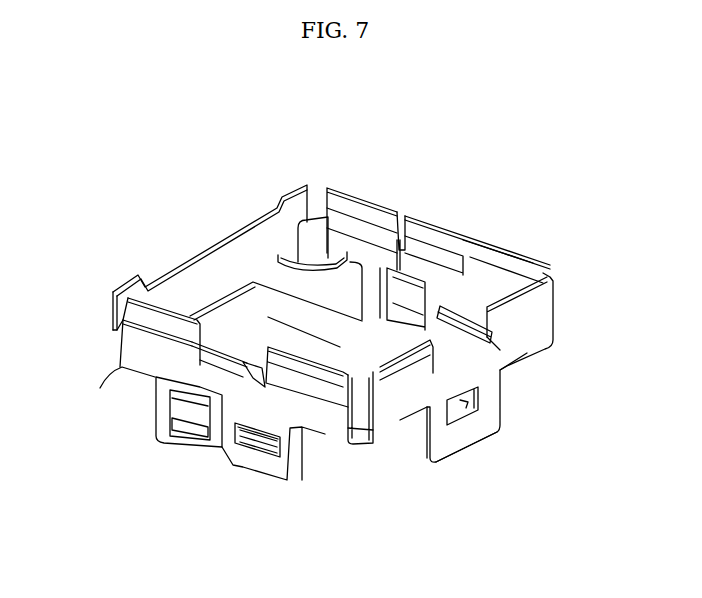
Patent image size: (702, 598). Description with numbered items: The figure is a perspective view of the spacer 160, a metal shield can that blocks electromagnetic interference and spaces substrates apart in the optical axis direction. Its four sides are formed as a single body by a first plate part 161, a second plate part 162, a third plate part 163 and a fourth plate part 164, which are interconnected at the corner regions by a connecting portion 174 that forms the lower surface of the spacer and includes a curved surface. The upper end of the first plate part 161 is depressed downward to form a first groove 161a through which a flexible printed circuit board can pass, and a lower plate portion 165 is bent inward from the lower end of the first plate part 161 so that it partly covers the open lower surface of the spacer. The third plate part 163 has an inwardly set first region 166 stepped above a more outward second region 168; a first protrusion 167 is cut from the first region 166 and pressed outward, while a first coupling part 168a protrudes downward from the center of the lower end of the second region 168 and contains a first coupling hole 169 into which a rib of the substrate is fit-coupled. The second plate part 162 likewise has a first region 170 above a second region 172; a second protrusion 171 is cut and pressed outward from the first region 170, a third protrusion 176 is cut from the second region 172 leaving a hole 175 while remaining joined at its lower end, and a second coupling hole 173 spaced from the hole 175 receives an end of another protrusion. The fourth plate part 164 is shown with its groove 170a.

The spacer 160 is at (112, 94).
The first plate part 161 is at (247, 224).
The first groove 161a is at (172, 266).
The second plate part 162 is at (113, 312).
The third plate part 163 is at (505, 290).
The fourth plate part 164 is at (365, 200).
The lower plate portion 165 is at (265, 302).
The first region 166 is at (545, 290).
The first protrusion 167 is at (483, 337).
The second region 168 is at (400, 418).
The first coupling part 168a is at (450, 438).
The first coupling hole 169 is at (477, 402).
The first region 170 is at (325, 377).
The groove 170a is at (403, 220).
The second protrusion 171 is at (160, 375).
The second region 172 is at (263, 467).
The second coupling hole 173 is at (255, 443).
The connecting portion 174 is at (314, 262).
The hole 175 is at (195, 392).
The third protrusion 176 is at (193, 423).